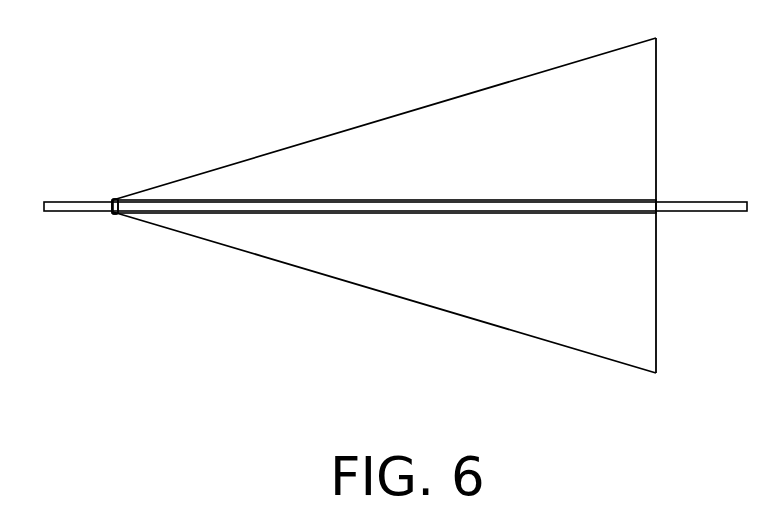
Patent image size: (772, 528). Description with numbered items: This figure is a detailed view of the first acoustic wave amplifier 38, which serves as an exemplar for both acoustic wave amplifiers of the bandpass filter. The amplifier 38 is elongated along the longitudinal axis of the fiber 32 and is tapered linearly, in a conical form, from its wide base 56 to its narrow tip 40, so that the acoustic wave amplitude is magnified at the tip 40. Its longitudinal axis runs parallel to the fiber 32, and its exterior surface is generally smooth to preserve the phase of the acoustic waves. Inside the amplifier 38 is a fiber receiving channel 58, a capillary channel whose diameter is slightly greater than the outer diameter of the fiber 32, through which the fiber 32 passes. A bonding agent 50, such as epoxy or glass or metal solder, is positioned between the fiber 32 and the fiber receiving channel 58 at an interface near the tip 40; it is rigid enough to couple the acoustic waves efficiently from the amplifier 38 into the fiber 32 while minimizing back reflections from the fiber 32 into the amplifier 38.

The fiber 32 is at (712, 213).
The first acoustic wave amplifier 38 is at (388, 293).
The tip 40 is at (118, 199).
The bonding agent 50 is at (114, 213).
The base 56 is at (655, 160).
The fiber receiving channel 58 is at (537, 215).